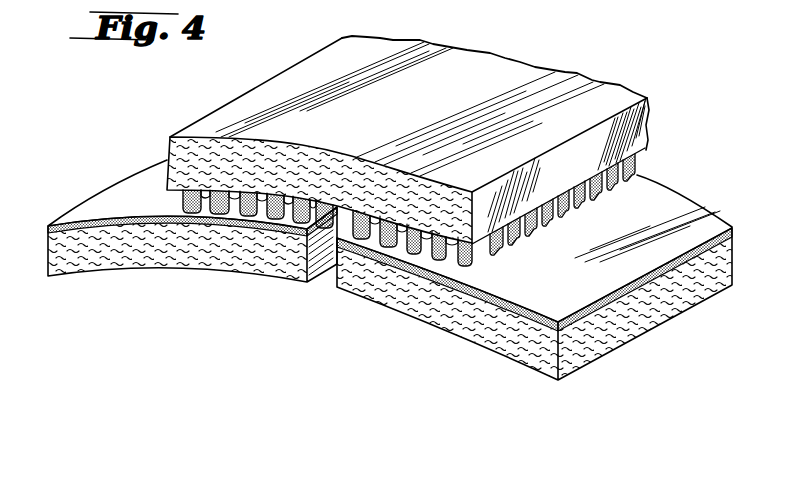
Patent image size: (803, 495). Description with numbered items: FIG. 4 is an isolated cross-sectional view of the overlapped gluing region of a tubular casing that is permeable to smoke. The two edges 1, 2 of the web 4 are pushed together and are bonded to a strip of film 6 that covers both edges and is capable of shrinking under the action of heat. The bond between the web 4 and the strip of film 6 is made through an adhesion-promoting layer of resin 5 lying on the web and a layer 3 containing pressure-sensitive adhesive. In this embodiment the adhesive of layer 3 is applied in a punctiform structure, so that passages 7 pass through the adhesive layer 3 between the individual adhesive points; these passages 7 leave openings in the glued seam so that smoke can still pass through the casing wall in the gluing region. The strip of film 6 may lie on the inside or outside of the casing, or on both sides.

The edge 1 is at (318, 265).
The edge 2 is at (334, 272).
The layer containing pressure-sensitive adhesive 3 is at (168, 186).
The web 4 is at (63, 252).
The adhesion-promoting layer of resin 5 is at (97, 223).
The strip of film 6 is at (432, 193).
The passages 7 is at (192, 212).